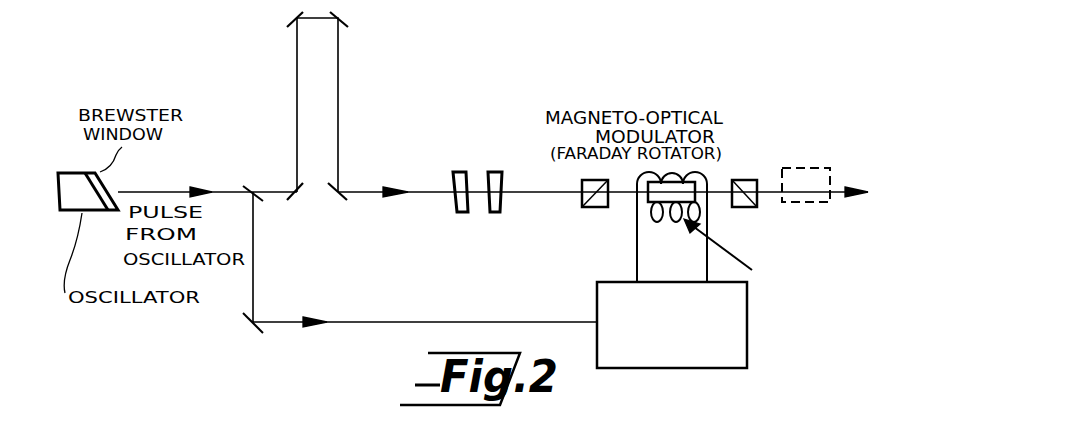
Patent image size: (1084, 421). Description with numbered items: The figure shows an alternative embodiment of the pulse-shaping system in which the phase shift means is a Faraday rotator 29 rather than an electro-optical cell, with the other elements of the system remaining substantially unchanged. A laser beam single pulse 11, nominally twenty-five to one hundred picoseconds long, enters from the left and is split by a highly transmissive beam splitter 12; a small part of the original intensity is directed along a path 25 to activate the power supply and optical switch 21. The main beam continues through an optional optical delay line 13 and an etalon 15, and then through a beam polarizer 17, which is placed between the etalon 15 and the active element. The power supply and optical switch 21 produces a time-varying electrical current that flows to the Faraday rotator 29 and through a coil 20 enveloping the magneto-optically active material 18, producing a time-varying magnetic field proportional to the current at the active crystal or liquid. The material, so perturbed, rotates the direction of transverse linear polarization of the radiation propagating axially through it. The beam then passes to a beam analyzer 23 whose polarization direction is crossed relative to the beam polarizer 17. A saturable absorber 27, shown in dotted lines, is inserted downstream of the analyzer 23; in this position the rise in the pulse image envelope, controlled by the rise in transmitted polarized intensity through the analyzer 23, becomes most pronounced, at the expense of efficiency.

The laser beam single pulse 11 is at (163, 190).
The beam splitter 12 is at (253, 191).
The optical delay line 13 is at (340, 97).
The etalon 15 is at (494, 212).
The beam polarizer 17 is at (582, 183).
The magneto-optically active material 18 is at (686, 205).
The coil 20 is at (656, 220).
The power supply and optical switch 21 is at (678, 358).
The beam analyzer 23 is at (722, 178).
The path 25 is at (357, 322).
The saturable absorber 27 is at (830, 178).
The Faraday rotator 29 is at (733, 252).